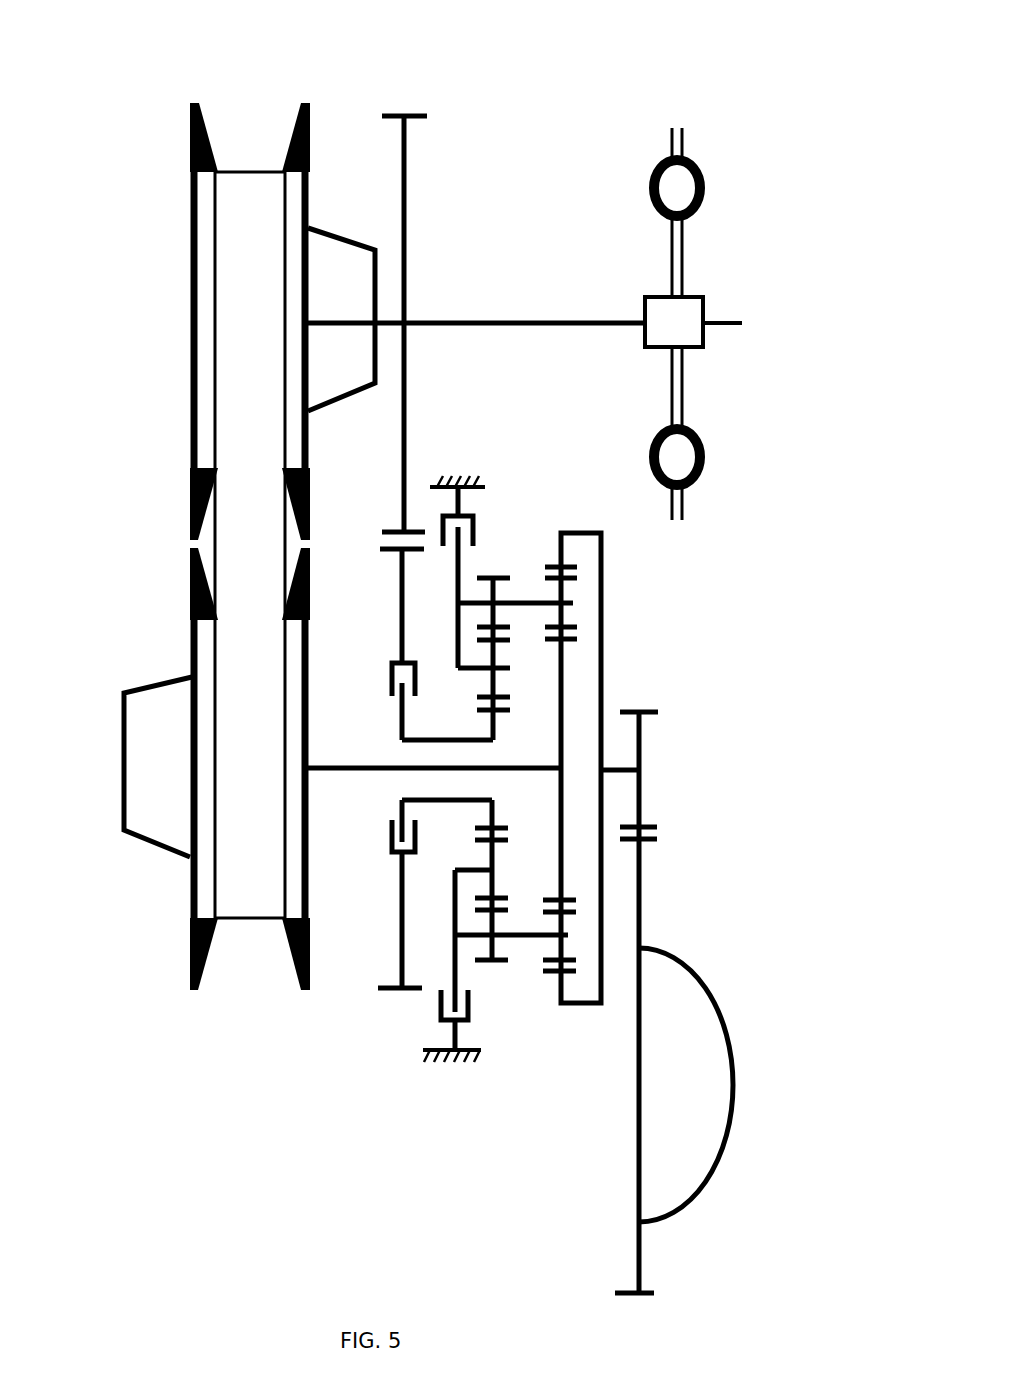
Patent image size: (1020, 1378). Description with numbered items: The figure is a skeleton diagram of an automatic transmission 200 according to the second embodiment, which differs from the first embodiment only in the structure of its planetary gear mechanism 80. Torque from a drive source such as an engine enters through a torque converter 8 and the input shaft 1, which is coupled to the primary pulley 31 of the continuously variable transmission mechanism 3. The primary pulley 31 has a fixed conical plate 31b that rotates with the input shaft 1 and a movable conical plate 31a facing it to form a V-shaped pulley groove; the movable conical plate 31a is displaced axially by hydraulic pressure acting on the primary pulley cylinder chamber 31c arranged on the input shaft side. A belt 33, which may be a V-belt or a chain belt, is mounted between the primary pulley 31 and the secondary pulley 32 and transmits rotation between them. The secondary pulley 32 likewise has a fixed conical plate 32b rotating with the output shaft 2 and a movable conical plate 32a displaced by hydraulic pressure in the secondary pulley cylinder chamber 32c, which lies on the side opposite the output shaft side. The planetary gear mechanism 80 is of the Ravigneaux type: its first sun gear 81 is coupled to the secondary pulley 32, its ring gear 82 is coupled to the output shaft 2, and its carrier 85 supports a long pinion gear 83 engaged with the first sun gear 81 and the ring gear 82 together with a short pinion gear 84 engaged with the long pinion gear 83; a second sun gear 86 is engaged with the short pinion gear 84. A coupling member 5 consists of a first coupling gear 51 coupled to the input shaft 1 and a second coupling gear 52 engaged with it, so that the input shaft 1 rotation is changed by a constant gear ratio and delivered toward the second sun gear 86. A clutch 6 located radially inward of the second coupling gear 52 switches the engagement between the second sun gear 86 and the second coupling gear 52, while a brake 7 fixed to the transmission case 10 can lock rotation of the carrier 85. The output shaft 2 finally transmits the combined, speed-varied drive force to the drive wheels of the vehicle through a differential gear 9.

The input shaft 1 is at (566, 323).
The output shaft 2 is at (643, 770).
The continuously variable transmission mechanism 3 is at (254, 84).
The coupling member 5 is at (417, 50).
The clutch 6 is at (390, 683).
The brake 7 is at (440, 1020).
The torque converter 8 is at (681, 128).
The differential gear 9 is at (641, 899).
The transmission case 10 is at (476, 1062).
The primary pulley 31 is at (168, 183).
The movable conical plate 31a is at (315, 138).
The fixed conical plate 31b is at (195, 128).
The primary pulley cylinder chamber 31c is at (335, 265).
The secondary pulley 32 is at (196, 791).
The movable conical plate 32a is at (182, 955).
The fixed conical plate 32b is at (307, 962).
The secondary pulley cylinder chamber 32c is at (152, 845).
The belt 33 is at (266, 176).
The first coupling gear 51 is at (427, 113).
The second coupling gear 52 is at (398, 612).
The planetary gear mechanism 80 is at (537, 1060).
The first sun gear 81 is at (363, 767).
The ring gear 82 is at (606, 566).
The long pinion gear 83 is at (530, 604).
The short pinion gear 84 is at (505, 668).
The carrier 85 is at (457, 623).
The second sun gear 86 is at (448, 737).
The automatic transmission 200 is at (758, 116).